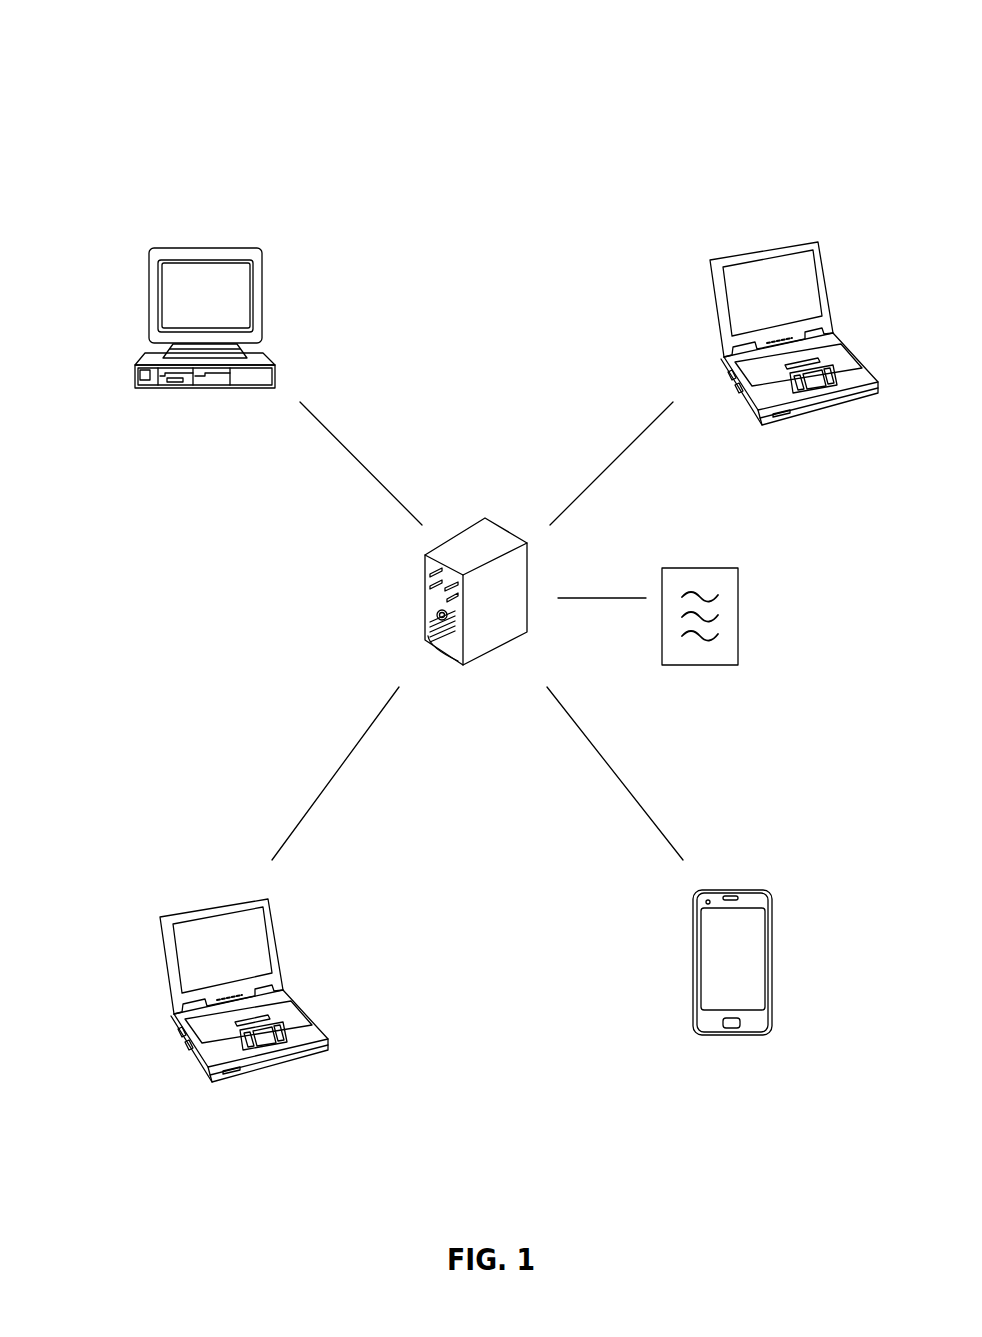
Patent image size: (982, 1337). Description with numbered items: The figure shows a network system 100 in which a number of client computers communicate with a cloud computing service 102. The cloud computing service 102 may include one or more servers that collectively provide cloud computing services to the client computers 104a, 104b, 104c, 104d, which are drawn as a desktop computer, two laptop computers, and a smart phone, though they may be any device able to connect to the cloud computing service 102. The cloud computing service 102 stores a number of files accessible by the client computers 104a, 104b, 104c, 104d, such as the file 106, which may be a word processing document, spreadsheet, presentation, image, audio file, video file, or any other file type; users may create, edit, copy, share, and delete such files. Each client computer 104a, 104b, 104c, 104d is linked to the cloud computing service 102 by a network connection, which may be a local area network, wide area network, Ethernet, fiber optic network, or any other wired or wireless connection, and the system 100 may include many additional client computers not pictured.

The network system 100 is at (316, 61).
The cloud computing service 102 is at (485, 517).
The client computer 104a is at (177, 240).
The client computer 104b is at (723, 253).
The client computer 104c is at (175, 913).
The client computer 104d is at (742, 889).
The file 106 is at (717, 565).